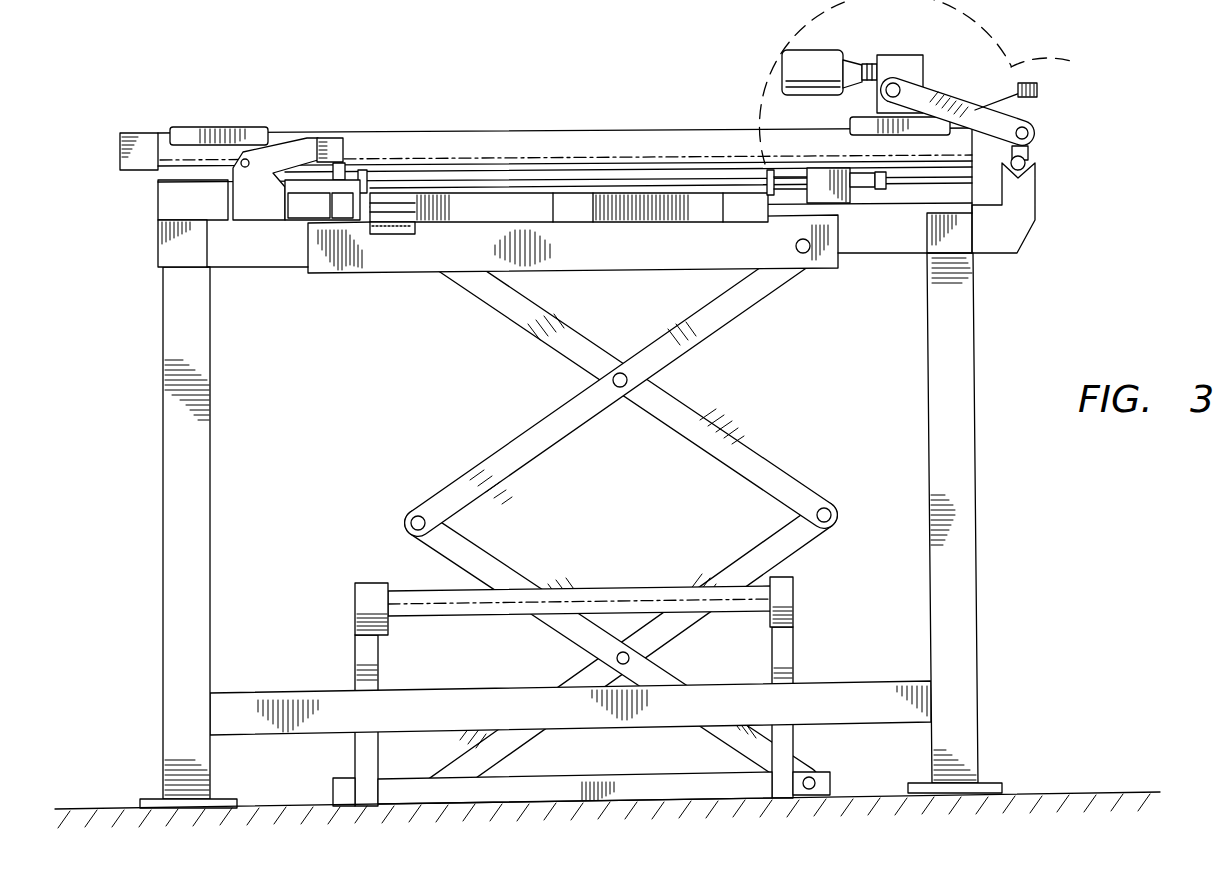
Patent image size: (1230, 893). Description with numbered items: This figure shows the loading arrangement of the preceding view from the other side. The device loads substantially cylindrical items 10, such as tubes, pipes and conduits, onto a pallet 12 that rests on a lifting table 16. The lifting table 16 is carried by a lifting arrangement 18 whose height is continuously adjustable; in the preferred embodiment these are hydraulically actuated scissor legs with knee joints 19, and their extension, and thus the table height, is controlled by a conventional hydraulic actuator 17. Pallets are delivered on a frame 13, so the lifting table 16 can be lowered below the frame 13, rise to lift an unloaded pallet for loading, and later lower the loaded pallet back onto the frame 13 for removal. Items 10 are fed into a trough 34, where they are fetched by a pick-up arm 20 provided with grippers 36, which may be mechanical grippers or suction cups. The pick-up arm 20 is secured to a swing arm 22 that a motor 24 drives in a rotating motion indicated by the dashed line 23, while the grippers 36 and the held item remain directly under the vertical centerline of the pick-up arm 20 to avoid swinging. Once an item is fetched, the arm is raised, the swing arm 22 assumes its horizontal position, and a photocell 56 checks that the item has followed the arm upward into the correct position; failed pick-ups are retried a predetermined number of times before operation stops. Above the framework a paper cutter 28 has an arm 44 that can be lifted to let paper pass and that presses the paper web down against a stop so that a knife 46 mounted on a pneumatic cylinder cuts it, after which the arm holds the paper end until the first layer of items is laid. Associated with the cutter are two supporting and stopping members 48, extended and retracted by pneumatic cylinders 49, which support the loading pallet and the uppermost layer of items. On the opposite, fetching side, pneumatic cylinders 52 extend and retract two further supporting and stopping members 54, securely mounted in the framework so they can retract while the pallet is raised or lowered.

The cylindrical items 10 is at (1040, 212).
The pallet 12 is at (398, 205).
The frame 13 is at (402, 583).
The lifting table 16 is at (410, 263).
The hydraulic actuator 17 is at (693, 782).
The lifting arrangement 18 is at (750, 441).
The knee joints 19 is at (836, 510).
The pick-up arm 20 is at (1040, 137).
The swing arm 22 is at (957, 90).
The dashed line 23 is at (1075, 62).
The motor 24 is at (806, 57).
The paper cutter 28 is at (331, 140).
The trough 34 is at (990, 258).
The grippers 36 is at (1040, 168).
The arm 44 is at (296, 148).
The knife 46 is at (332, 173).
The supporting and stopping members 48 is at (367, 185).
The pneumatic cylinders 49 is at (310, 210).
The pneumatic cylinders 52 is at (851, 205).
The supporting and stopping members 54 is at (760, 147).
The photocell 56 is at (1043, 92).